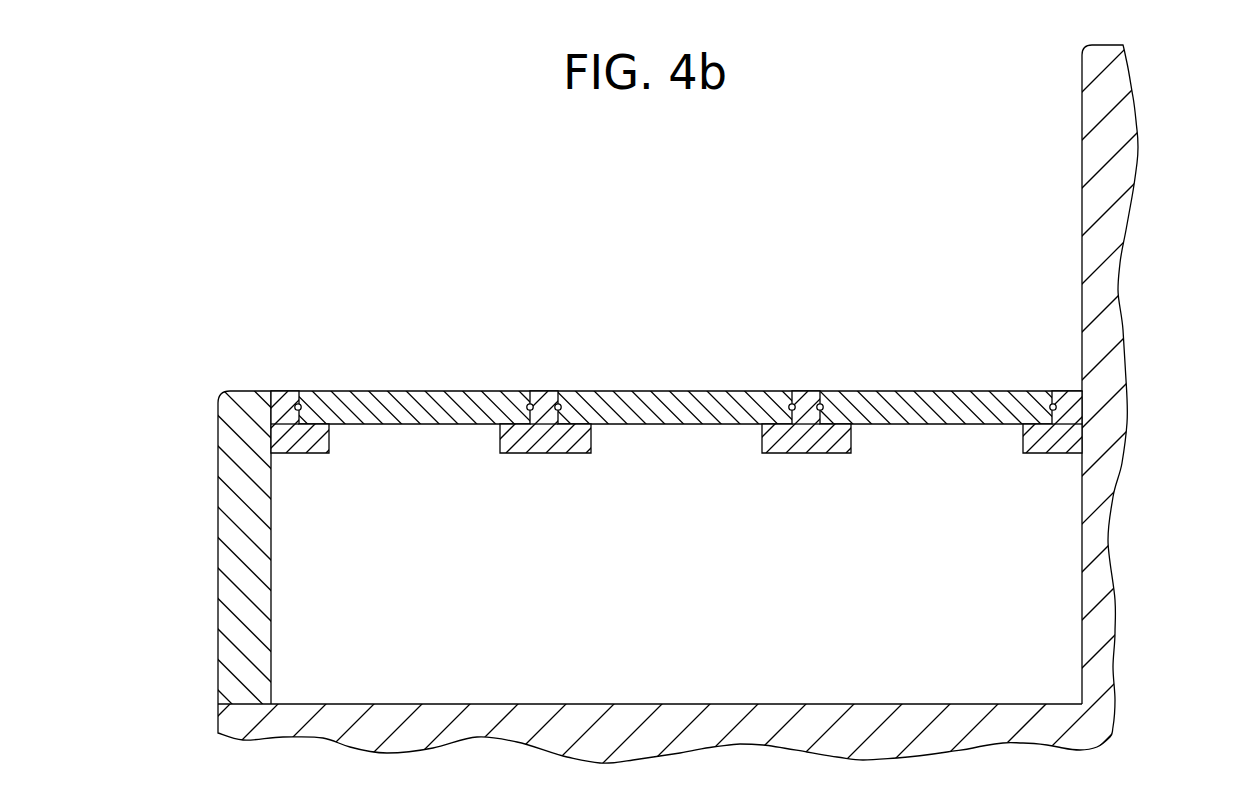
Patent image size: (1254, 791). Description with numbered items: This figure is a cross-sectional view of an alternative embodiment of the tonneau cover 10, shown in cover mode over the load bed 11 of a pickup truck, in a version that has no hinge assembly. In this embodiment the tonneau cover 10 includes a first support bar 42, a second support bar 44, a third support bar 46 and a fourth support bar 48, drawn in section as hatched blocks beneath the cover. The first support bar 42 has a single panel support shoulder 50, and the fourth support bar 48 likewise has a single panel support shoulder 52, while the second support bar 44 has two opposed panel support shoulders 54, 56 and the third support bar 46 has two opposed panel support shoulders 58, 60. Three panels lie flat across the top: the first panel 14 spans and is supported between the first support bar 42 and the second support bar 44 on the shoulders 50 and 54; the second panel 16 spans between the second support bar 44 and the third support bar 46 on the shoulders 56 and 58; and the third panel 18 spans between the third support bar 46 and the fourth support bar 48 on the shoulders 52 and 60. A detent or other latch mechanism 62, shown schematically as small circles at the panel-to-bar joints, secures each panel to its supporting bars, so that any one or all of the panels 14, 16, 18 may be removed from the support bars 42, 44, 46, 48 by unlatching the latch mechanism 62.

The tonneau cover 10 is at (448, 243).
The load bed 11 is at (625, 704).
The first panel 14 is at (415, 410).
The second panel 16 is at (677, 410).
The third panel 18 is at (950, 415).
The first support bar 42 is at (278, 418).
The second support bar 44 is at (528, 453).
The third support bar 46 is at (813, 452).
The fourth support bar 48 is at (1072, 437).
The panel support shoulder 50 is at (313, 415).
The panel support shoulder 52 is at (1034, 424).
The panel support shoulder 54 is at (518, 424).
The panel support shoulder 56 is at (583, 424).
The panel support shoulder 58 is at (770, 424).
The panel support shoulder 60 is at (842, 424).
The latch mechanism 62 is at (298, 402).